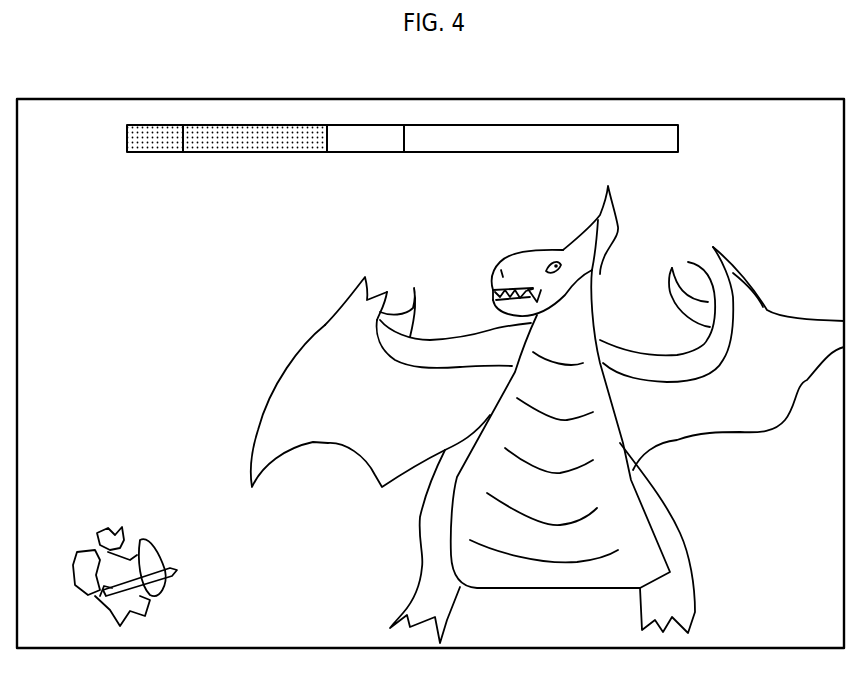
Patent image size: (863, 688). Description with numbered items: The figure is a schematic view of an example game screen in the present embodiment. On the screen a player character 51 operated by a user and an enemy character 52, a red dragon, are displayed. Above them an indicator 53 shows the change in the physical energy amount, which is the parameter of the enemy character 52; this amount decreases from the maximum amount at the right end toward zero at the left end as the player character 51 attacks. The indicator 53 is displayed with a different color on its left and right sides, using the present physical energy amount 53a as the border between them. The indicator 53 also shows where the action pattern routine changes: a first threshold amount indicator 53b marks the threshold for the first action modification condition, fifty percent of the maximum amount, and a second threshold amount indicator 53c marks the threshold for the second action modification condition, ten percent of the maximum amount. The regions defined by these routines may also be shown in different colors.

The player character 51 is at (167, 577).
The enemy character 52 is at (665, 528).
The indicator 53 is at (513, 130).
The present physical energy amount 53a is at (331, 164).
The first threshold amount indicator 53b is at (408, 164).
The second threshold amount indicator 53c is at (186, 164).